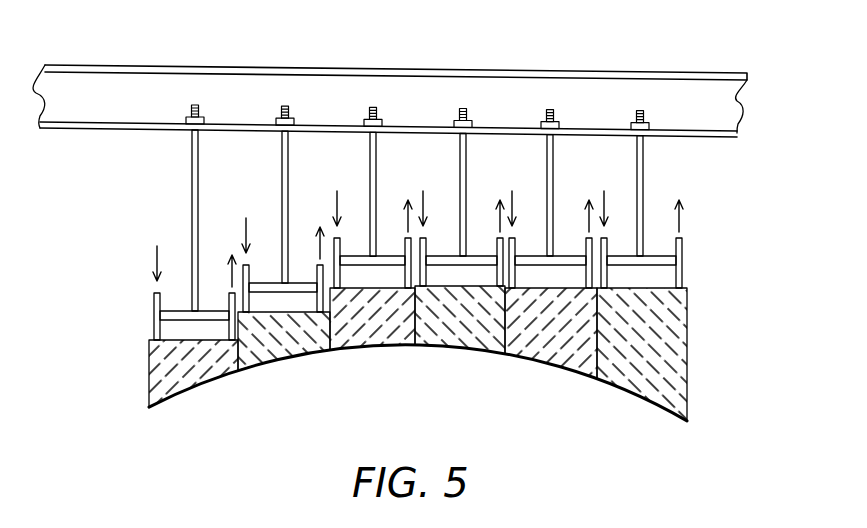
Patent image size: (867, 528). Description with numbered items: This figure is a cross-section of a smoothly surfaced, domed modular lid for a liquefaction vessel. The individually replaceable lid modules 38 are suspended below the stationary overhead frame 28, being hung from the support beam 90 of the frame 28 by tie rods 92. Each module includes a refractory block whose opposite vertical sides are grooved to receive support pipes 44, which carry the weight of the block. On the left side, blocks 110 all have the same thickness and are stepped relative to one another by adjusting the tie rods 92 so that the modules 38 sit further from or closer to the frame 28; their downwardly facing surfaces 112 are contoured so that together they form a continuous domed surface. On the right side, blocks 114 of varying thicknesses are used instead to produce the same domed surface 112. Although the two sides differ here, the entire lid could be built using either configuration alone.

The overhead frame 28 is at (481, 73).
The support beam 90 is at (740, 91).
The tie rods 92 is at (192, 190).
The support pipes 44 is at (154, 298).
The lid modules 38 is at (424, 353).
The blocks 110 is at (149, 386).
The downwardly facing surfaces 112 is at (293, 358).
The blocks of varying thicknesses 114 is at (688, 383).